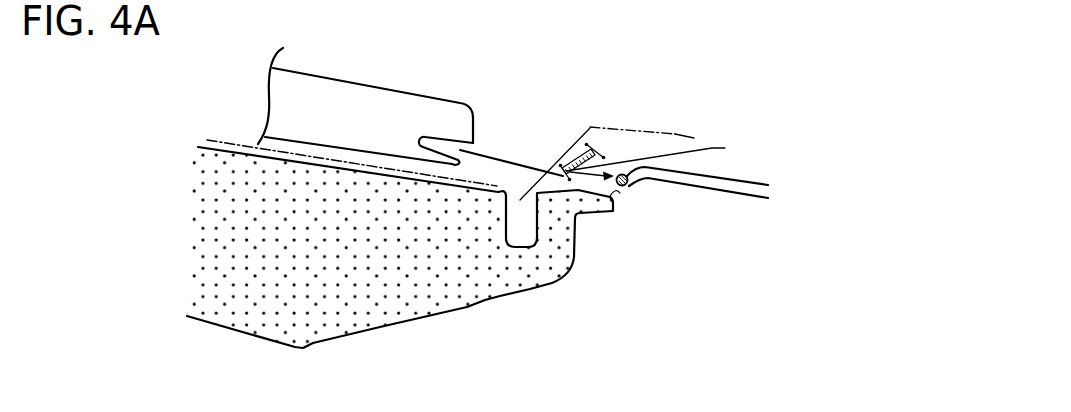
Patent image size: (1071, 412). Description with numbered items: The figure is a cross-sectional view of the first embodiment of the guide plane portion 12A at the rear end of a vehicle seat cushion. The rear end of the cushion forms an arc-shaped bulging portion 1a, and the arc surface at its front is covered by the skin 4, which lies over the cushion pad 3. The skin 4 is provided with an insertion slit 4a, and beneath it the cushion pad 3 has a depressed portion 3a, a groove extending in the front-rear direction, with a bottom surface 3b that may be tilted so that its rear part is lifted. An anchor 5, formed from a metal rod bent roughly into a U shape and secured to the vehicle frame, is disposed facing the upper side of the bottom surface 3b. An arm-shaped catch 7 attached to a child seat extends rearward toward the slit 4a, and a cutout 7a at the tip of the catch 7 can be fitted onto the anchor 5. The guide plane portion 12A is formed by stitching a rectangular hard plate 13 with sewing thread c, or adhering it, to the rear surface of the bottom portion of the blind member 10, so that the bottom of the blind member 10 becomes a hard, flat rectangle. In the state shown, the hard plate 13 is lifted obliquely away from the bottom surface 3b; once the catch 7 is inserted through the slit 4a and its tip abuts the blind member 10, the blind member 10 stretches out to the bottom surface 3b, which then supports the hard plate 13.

The bulging portion 1a is at (675, 134).
The cushion pad 3 is at (442, 295).
The depressed portion 3a is at (550, 207).
The bottom surface 3b is at (620, 193).
The skin 4 is at (235, 140).
The insertion slit 4a is at (522, 200).
The anchor 5 is at (630, 190).
The catch 7 is at (338, 93).
The cutout 7a is at (438, 140).
The blind member 10 is at (556, 168).
The guide plane portion 12A is at (584, 200).
The hard plate 13 is at (607, 155).
The sewing thread c is at (582, 182).